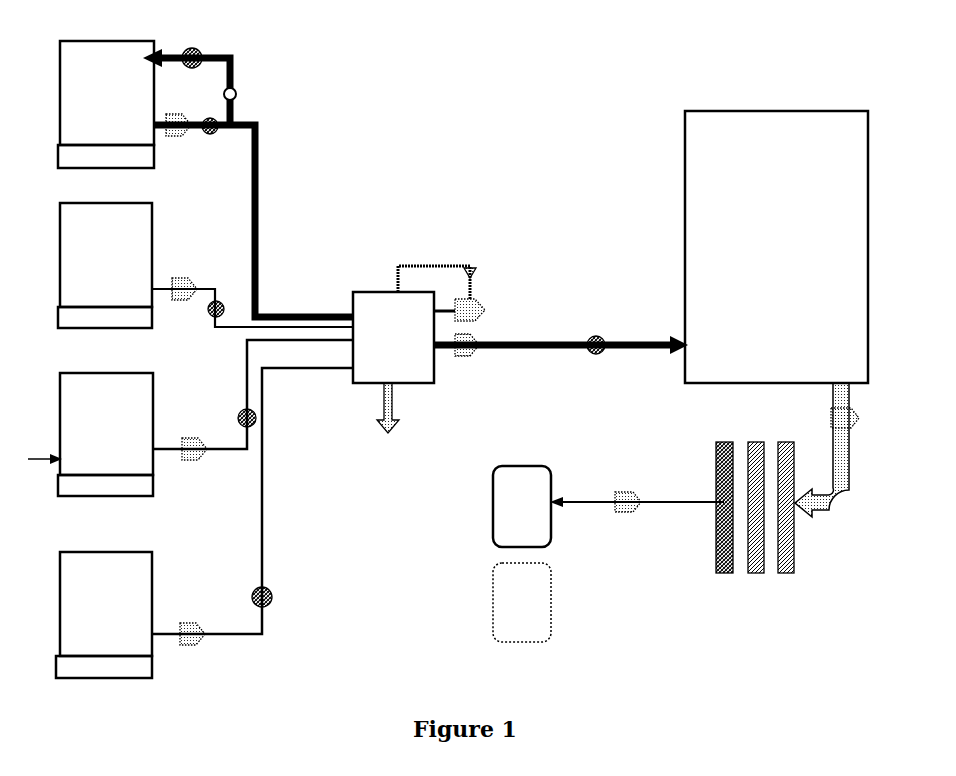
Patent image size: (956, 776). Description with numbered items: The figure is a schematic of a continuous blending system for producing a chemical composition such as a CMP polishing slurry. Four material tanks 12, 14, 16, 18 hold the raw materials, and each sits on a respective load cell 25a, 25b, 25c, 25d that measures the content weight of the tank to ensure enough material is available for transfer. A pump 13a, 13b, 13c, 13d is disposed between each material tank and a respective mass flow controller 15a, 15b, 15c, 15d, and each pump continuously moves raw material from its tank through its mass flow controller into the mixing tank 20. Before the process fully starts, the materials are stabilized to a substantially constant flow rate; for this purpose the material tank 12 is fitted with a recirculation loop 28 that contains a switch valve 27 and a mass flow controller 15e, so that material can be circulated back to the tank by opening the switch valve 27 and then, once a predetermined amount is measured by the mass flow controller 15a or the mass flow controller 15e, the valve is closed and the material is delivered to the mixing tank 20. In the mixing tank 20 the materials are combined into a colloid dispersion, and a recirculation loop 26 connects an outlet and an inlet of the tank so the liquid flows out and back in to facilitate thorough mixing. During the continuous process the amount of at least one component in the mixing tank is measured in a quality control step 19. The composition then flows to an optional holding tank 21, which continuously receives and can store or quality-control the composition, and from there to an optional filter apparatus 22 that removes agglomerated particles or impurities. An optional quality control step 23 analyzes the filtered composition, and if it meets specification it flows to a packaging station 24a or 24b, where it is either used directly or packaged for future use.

The material tank 12 is at (107, 93).
The pump 13a is at (178, 139).
The pump 13b is at (191, 277).
The pump 13c is at (196, 461).
The pump 13d is at (200, 619).
The material tank 14 is at (106, 255).
The mass flow controller 15a is at (215, 141).
The mass flow controller 15b is at (205, 328).
The mass flow controller 15c is at (226, 419).
The mass flow controller 15d is at (289, 598).
The mass flow controller 15e is at (214, 48).
The material tank 16 is at (106, 424).
The material tank 18 is at (106, 604).
The quality control step 19 is at (389, 427).
The mixing tank 20 is at (393, 337).
The holding tank 21 is at (776, 247).
The filter apparatus 22 is at (755, 529).
The quality control step 23 is at (676, 512).
The packaging station 24a is at (522, 506).
The packaging station 24b is at (522, 602).
The load cell 25a is at (106, 157).
The load cell 25b is at (105, 319).
The load cell 25c is at (105, 487).
The load cell 25d is at (104, 668).
The recirculation loop 26 is at (437, 267).
The switch valve 27 is at (262, 87).
The recirculation loop 28 is at (252, 68).